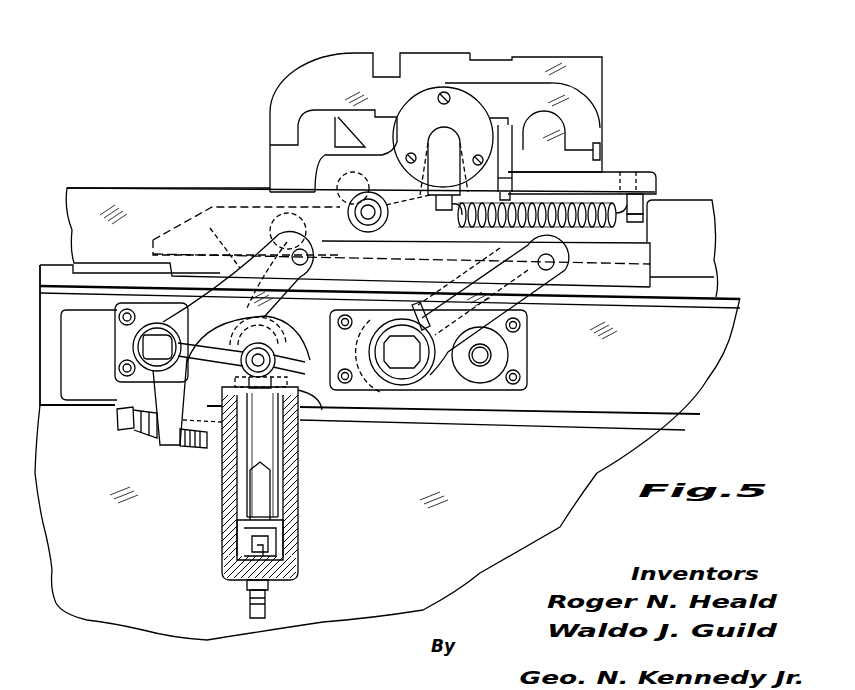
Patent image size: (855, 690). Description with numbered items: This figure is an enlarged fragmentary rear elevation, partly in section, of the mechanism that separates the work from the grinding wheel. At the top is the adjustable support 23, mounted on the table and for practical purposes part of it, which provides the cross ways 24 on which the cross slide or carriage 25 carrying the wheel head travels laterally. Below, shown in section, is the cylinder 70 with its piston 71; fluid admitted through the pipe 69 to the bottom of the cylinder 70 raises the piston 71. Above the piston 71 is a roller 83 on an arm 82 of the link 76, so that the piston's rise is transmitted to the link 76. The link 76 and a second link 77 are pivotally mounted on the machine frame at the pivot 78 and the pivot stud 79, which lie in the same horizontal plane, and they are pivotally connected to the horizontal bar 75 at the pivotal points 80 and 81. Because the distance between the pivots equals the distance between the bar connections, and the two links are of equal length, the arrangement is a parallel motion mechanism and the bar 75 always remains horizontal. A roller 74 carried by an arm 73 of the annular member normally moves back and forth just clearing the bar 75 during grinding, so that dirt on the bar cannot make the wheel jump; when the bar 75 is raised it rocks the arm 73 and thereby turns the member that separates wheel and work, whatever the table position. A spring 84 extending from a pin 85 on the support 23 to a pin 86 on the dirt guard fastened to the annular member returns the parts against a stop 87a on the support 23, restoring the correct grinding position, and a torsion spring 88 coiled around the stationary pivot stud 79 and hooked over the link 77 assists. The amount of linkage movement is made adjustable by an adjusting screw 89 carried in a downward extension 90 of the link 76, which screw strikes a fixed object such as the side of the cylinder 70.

The adjustable support 23 is at (620, 177).
The cross ways 24 is at (530, 128).
The cross slide or carriage 25 is at (597, 72).
The pipe 69 is at (252, 612).
The cylinder 70 is at (230, 537).
The piston 71 is at (243, 463).
The arm 73 is at (395, 195).
The roller 74 is at (367, 207).
The horizontal bar 75 is at (642, 255).
The link 76 is at (232, 278).
The link 77 is at (480, 328).
The pivot 78 is at (153, 335).
The pivot stud 79 is at (420, 380).
The pivotal point 80 is at (298, 253).
The pivotal point 81 is at (553, 269).
The arm 82 is at (312, 393).
The roller 83 is at (300, 420).
The spring 84 is at (470, 115).
The pin 85 is at (657, 193).
The pin 86 is at (401, 235).
The stop 87a is at (508, 177).
The torsion spring 88 is at (390, 382).
The adjusting screw 89 is at (122, 420).
The downward extension 90 is at (170, 440).